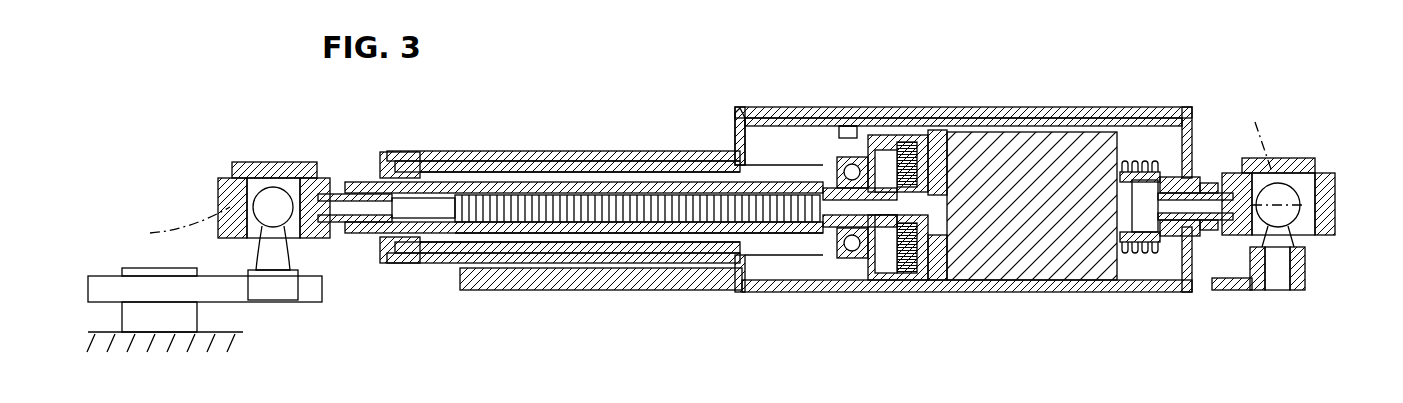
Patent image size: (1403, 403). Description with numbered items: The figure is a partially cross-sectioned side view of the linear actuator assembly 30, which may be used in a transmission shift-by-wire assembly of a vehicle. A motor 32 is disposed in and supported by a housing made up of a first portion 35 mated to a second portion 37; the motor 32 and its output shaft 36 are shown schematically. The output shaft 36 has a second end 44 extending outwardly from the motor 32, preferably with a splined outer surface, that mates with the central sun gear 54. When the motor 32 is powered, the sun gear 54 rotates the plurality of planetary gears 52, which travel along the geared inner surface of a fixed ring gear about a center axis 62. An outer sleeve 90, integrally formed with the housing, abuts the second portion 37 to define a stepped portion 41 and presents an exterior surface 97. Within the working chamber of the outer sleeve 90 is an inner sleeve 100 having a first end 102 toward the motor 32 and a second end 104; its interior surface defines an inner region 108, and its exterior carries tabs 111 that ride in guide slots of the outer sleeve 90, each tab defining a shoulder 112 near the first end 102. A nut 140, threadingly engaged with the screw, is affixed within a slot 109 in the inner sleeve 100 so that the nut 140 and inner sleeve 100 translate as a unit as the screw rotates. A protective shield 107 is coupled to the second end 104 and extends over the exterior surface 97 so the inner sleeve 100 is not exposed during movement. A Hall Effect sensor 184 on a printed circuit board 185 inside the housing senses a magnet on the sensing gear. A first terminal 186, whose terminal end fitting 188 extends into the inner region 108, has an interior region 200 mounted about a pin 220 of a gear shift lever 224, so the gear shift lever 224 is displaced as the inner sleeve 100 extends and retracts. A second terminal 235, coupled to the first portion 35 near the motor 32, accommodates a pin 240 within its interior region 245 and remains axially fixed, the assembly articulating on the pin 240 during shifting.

The linear actuator assembly 30 is at (1137, 82).
The motor 32 is at (1045, 235).
The first portion 35 is at (1078, 113).
The output shaft 36 is at (905, 207).
The second portion 37 is at (878, 108).
The stepped portion 41 is at (738, 128).
The second end 44 is at (895, 207).
The planetary gears 52 is at (908, 265).
The sun gear 54 is at (940, 212).
The center axis 62 is at (697, 172).
The outer sleeve 90 is at (546, 163).
The exterior surface 97 is at (486, 158).
The inner sleeve 100 is at (650, 180).
The first end 102 is at (790, 172).
The second end 104 is at (365, 172).
The protective shield 107 is at (392, 152).
The inner region 108 is at (430, 198).
The slot 109 is at (710, 235).
The tabs 111 is at (775, 252).
The shoulder 112 is at (620, 170).
The nut 140 is at (690, 224).
The Hall Effect sensor 184 is at (847, 126).
The printed circuit board 185 is at (858, 126).
The first terminal 186 is at (232, 133).
The terminal end fitting 188 is at (250, 163).
The interior region 200 is at (287, 182).
The pin 220 is at (282, 215).
The gear shift lever 224 is at (235, 292).
The second terminal 235 is at (1313, 158).
The pin 240 is at (1292, 222).
The interior region 245 is at (1285, 190).